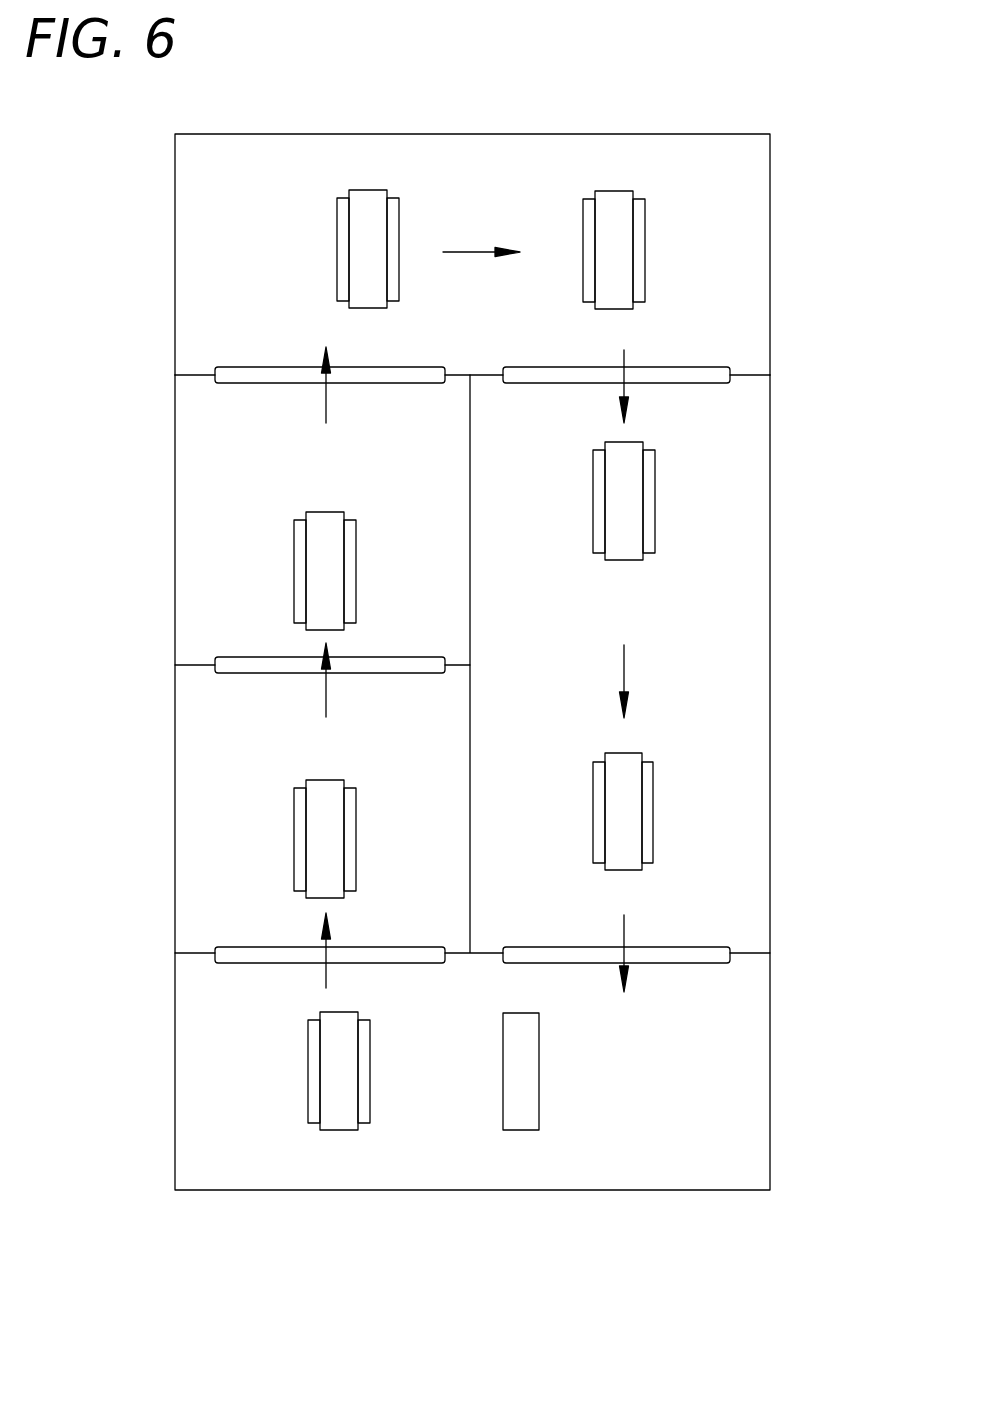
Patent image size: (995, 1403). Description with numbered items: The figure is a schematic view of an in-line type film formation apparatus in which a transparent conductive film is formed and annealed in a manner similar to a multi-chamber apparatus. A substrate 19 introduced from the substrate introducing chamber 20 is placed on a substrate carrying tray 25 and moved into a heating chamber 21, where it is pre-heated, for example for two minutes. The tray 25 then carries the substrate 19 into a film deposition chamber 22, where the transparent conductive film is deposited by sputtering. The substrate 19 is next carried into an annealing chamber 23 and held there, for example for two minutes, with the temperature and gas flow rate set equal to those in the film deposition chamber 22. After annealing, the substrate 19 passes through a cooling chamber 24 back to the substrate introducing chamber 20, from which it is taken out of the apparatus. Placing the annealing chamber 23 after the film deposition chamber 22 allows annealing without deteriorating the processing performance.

The substrate 19 is at (653, 806).
The substrate introducing chamber 20 is at (210, 1013).
The heating chamber 21 is at (198, 778).
The film deposition chamber 22 is at (198, 470).
The annealing chamber 23 is at (193, 166).
The cooling chamber 24 is at (758, 664).
The substrate carrying tray 25 is at (630, 842).